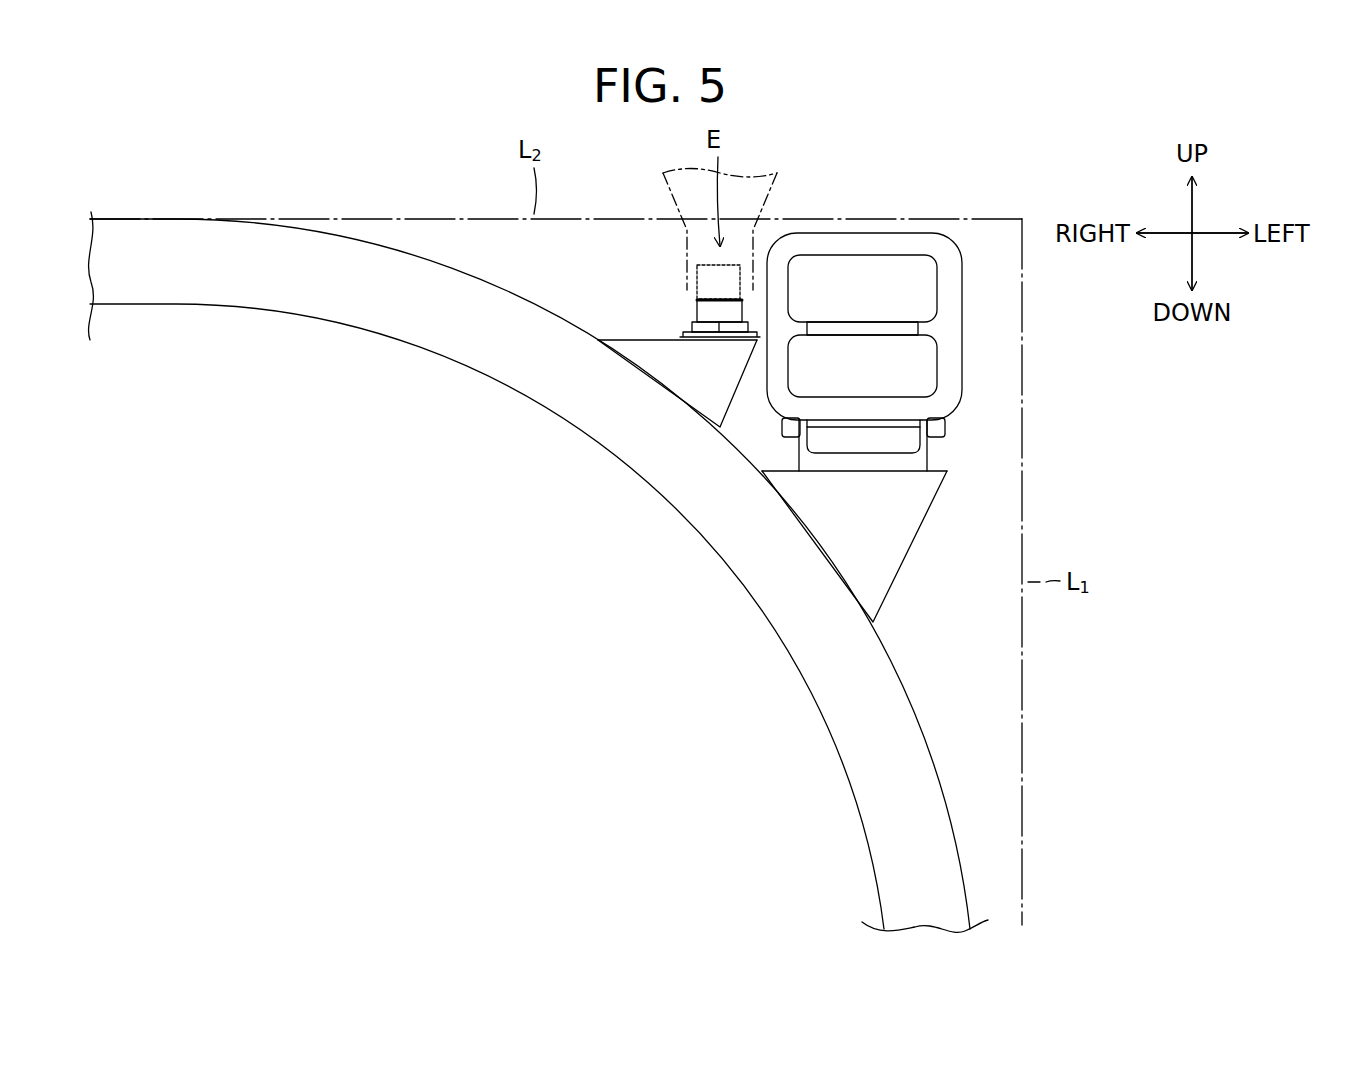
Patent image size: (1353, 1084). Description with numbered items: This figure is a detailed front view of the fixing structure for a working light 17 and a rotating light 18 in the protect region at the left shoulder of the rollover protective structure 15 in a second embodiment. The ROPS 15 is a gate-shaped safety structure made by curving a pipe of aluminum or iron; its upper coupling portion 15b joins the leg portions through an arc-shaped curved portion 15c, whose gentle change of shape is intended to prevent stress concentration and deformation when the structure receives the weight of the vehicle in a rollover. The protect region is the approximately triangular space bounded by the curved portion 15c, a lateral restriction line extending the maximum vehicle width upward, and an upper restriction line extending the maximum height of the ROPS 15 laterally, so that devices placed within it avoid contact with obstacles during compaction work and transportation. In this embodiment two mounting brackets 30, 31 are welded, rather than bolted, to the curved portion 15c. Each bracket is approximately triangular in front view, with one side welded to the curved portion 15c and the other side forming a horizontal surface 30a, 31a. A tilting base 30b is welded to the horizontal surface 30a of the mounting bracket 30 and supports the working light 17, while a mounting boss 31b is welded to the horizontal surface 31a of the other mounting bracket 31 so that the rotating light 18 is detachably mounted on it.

The rollover protective structure (ROPS) 15 is at (554, 551).
The coupling portion 15b is at (162, 240).
The curved portion 15c is at (910, 738).
The working light 17 is at (950, 310).
The rotating light 18 is at (772, 185).
The mounting bracket 30 is at (886, 542).
The horizontal surface 30a is at (942, 462).
The tilting base 30b is at (925, 447).
The mounting bracket 31 is at (690, 360).
The horizontal surface 31a is at (622, 338).
The mounting boss 31b is at (713, 270).